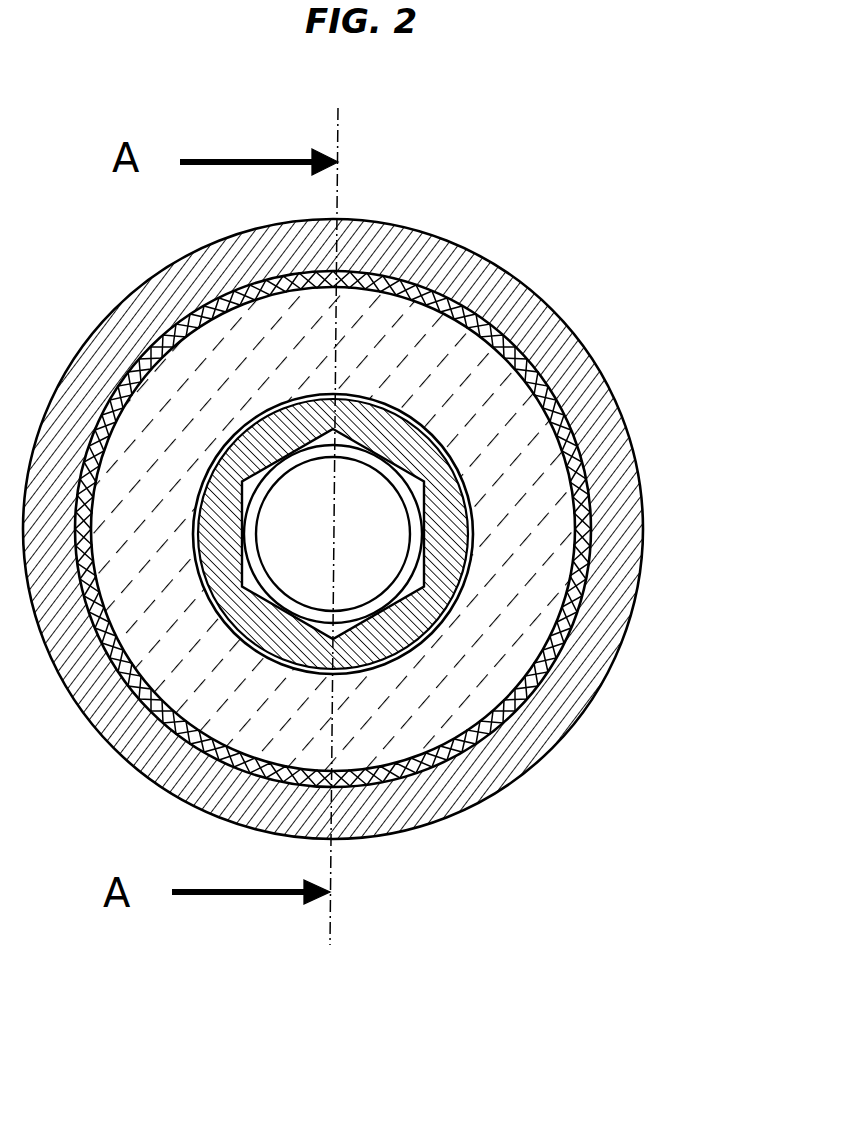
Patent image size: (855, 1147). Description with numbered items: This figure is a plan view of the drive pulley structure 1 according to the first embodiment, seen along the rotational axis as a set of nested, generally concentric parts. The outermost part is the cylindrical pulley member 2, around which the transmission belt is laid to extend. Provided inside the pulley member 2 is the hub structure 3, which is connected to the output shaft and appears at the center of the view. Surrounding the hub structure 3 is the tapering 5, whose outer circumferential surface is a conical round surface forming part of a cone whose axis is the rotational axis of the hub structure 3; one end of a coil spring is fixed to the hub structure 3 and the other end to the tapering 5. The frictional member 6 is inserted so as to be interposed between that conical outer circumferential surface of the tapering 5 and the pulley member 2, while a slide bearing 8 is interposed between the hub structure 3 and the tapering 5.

The drive pulley structure 1 is at (518, 237).
The pulley member 2 is at (582, 356).
The hub structure 3 is at (450, 546).
The tapering 5 is at (545, 492).
The frictional member 6 is at (575, 436).
The slide bearing 8 is at (450, 598).